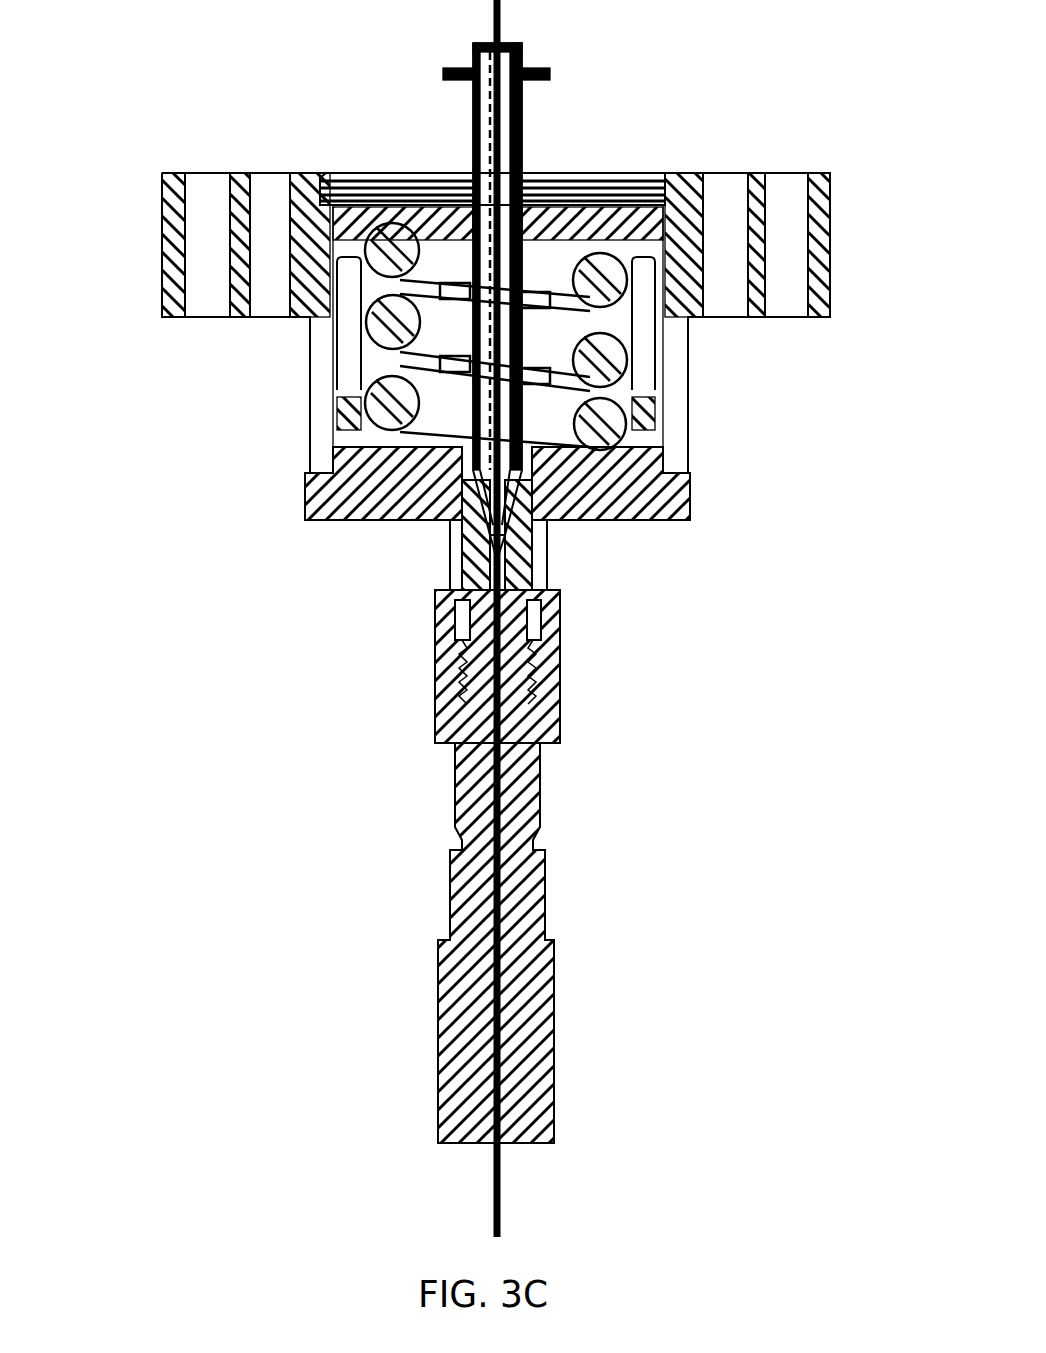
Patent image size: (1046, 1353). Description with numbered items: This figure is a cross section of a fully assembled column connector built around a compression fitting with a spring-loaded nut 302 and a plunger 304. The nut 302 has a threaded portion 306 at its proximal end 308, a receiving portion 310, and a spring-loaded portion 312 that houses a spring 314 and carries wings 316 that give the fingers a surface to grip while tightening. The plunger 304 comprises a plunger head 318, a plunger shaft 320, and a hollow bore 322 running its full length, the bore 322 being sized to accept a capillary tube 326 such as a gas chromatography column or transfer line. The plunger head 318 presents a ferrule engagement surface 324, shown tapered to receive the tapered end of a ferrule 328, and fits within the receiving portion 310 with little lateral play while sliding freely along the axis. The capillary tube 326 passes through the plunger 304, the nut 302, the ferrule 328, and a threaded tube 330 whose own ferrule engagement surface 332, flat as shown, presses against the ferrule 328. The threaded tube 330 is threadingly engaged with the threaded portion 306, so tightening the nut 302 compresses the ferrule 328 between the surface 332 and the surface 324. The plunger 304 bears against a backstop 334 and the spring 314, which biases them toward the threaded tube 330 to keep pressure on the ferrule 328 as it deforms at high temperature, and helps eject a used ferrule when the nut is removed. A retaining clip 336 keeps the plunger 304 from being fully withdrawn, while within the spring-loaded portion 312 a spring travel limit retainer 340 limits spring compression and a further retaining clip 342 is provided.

The spring-loaded nut 302 is at (342, 524).
The plunger 304 is at (475, 110).
The threaded portion 306 is at (700, 622).
The proximal end 308 is at (437, 743).
The receiving portion 310 is at (700, 485).
The spring-loaded portion 312 is at (852, 160).
The spring 314 is at (437, 343).
The wings 316 is at (170, 250).
The plunger head 318 is at (462, 540).
The plunger shaft 320 is at (522, 147).
The hollow bore 322 is at (490, 135).
The ferrule engagement surface 324 is at (468, 575).
The capillary tube 326 is at (494, 22).
The ferrule 328 is at (515, 583).
The threaded tube 330 is at (467, 903).
The ferrule engagement surface 332 is at (530, 620).
The backstop 334 is at (322, 480).
The retaining clip 336 is at (443, 75).
The spring travel limit retainer 340 is at (653, 400).
The retaining clip 342 is at (608, 173).